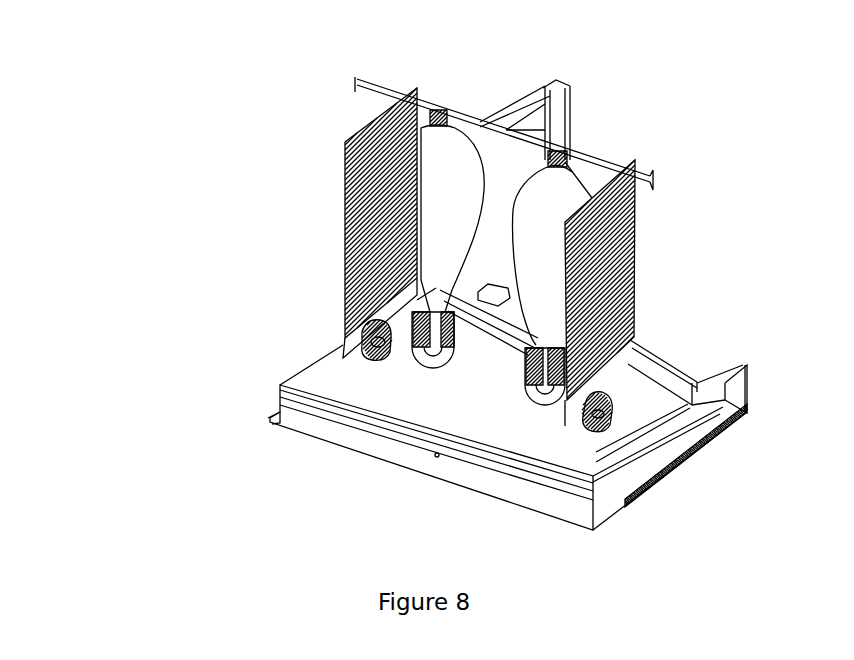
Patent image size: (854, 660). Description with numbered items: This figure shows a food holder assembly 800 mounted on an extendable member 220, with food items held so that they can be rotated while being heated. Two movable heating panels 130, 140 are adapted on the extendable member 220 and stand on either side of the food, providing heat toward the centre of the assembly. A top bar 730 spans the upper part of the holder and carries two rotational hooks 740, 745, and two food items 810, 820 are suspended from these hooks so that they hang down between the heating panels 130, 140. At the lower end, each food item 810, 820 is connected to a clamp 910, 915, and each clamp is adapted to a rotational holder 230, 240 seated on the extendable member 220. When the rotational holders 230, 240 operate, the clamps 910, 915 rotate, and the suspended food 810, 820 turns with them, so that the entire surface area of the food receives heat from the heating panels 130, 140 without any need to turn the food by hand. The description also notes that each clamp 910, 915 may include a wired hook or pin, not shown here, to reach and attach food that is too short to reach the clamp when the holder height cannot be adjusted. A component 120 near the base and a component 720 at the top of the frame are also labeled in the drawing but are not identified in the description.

The fluid handling assembly 800 is at (183, 117).
The mounting clip 120 is at (615, 413).
The movable heating panel 130 is at (352, 153).
The movable heating panel 140 is at (623, 196).
The extendable member 220 is at (316, 434).
The rotational holder 230 is at (540, 410).
The rotational holder 240 is at (435, 375).
The support post 720 is at (573, 125).
The top bar 730 is at (480, 120).
The rotational hook 740 is at (433, 121).
The rotational hook 745 is at (560, 160).
The food 810 is at (433, 170).
The food 820 is at (558, 229).
The clamp 910 is at (421, 342).
The clamp 915 is at (554, 390).